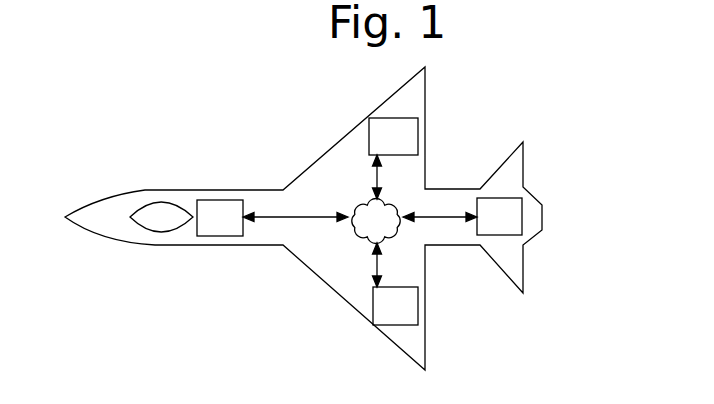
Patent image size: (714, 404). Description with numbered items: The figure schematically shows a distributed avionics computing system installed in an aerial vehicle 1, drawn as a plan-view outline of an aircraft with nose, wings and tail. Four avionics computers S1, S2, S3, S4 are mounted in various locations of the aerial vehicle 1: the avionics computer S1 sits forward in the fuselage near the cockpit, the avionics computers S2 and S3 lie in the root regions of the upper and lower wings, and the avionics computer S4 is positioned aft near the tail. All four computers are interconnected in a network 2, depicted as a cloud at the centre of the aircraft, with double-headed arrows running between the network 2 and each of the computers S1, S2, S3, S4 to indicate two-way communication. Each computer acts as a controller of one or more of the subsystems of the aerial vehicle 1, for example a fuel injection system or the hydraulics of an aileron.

The aerial vehicle 1 is at (143, 190).
The network 2 is at (401, 209).
The avionics computer S1 is at (209, 229).
The avionics computer S2 is at (382, 147).
The avionics computer S3 is at (384, 317).
The avionics computer S4 is at (488, 227).